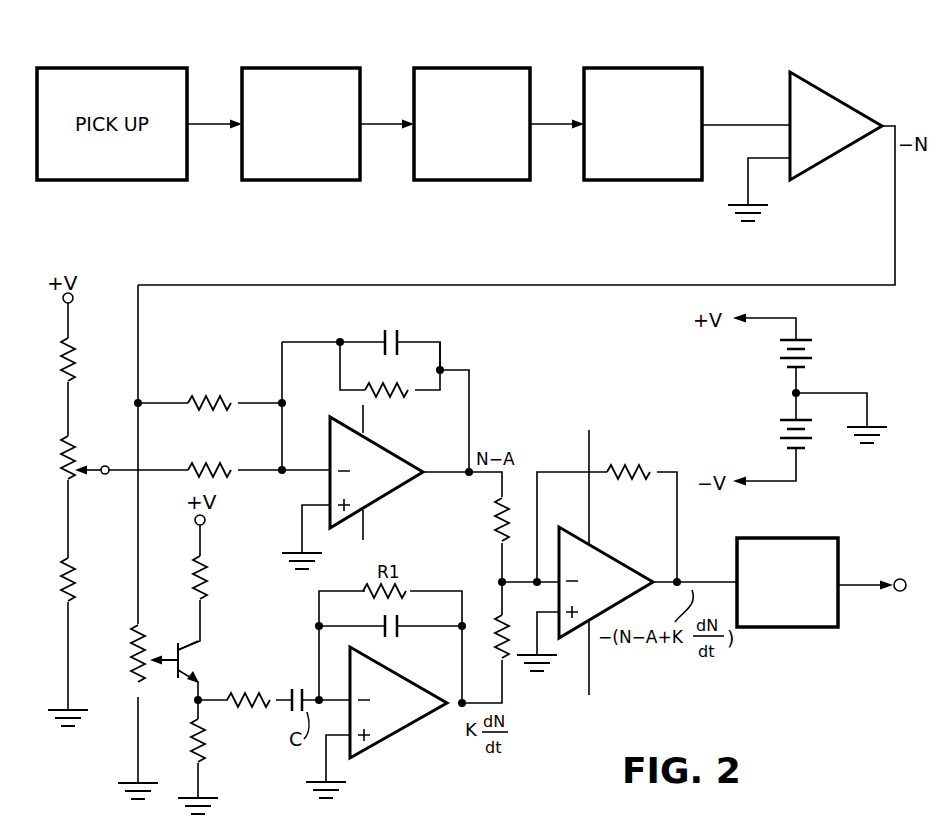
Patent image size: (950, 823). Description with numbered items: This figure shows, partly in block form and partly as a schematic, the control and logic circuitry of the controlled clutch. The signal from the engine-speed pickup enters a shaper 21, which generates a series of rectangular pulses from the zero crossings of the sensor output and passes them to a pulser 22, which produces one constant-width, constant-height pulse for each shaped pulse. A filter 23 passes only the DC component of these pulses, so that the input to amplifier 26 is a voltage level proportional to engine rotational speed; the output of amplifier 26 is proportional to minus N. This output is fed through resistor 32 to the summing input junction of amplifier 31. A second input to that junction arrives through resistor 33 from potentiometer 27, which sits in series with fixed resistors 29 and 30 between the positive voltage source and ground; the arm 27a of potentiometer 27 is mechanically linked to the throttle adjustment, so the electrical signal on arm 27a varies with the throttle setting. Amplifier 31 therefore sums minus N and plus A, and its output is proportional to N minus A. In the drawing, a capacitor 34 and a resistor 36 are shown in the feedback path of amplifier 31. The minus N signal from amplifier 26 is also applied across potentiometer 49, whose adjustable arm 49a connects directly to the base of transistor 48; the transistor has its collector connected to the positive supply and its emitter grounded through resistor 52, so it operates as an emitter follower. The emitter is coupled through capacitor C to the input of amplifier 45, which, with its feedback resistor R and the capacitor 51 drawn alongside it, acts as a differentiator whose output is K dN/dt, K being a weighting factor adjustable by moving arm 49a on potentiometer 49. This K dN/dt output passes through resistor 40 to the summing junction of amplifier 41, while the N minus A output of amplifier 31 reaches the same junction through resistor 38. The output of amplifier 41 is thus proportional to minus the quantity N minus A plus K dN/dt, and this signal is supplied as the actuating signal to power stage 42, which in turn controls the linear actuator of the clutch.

The shaper 21 is at (280, 60).
The pulser 22 is at (452, 60).
The filter 23 is at (627, 60).
The amplifier 26 is at (836, 98).
The potentiometer 27 is at (59, 461).
The arm of potentiometer 27a is at (98, 466).
The fixed resistor 29 is at (60, 369).
The fixed resistor 30 is at (58, 593).
The amplifier 31 is at (383, 498).
The resistor 32 is at (223, 398).
The resistor 33 is at (220, 467).
The feedback capacitor 34 is at (400, 338).
The feedback resistor 36 is at (398, 395).
The resistor 38 is at (496, 531).
The resistor 40 is at (512, 680).
The amplifier 41 is at (603, 554).
The power stage 42 is at (808, 538).
The amplifier 45 is at (392, 737).
The transistor 48 is at (189, 686).
The potentiometer 49 is at (130, 646).
The adjustable arm 49a is at (160, 655).
The feedback capacitor 51 is at (404, 624).
The resistor 52 is at (206, 764).